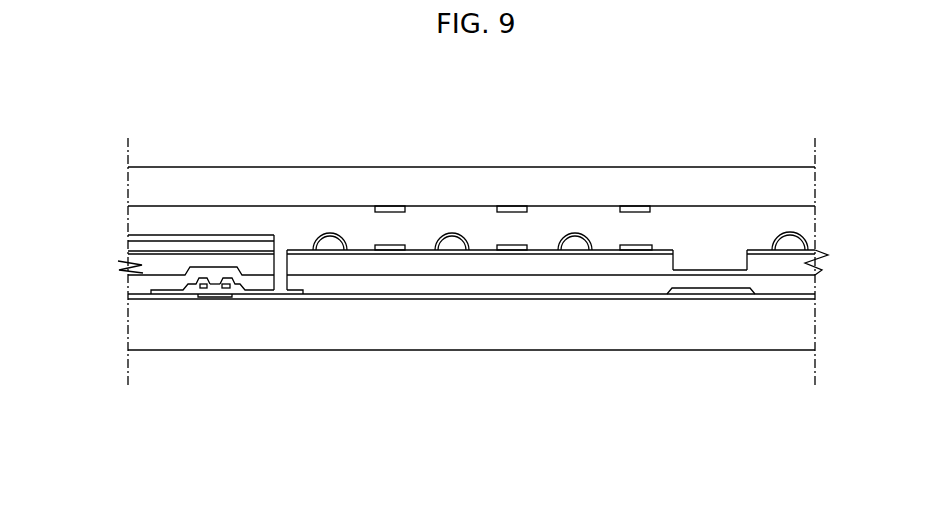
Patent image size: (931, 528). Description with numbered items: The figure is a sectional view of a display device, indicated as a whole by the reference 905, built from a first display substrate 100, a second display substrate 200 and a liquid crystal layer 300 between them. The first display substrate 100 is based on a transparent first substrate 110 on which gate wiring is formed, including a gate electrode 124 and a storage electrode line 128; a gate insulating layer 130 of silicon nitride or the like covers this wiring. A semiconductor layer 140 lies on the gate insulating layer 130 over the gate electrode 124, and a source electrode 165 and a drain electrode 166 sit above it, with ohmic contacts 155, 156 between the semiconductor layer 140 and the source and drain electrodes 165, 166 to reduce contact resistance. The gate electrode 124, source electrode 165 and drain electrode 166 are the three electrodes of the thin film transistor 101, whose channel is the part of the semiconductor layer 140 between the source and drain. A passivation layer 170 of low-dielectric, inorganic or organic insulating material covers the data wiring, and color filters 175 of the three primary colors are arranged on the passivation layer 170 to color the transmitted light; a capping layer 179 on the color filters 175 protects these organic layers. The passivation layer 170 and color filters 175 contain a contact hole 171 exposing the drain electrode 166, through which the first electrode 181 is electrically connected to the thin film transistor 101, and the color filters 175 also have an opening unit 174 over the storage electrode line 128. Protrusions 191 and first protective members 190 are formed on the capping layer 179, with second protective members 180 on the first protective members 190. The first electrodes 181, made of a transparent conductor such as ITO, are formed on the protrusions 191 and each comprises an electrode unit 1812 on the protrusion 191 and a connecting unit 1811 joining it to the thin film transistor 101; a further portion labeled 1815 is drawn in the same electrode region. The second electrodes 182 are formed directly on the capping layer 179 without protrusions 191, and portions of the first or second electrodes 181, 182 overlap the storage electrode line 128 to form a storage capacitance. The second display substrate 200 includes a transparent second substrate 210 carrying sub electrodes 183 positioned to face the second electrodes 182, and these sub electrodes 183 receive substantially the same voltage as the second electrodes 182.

The first display substrate 100 is at (132, 400).
The thin film transistor 101 is at (256, 341).
The first substrate 110 is at (653, 330).
The gate electrode 124 is at (215, 337).
The storage electrode line 128 is at (712, 292).
The gate insulating layer 130 is at (357, 297).
The semiconductor layer 140 is at (218, 289).
The ohmic contact 155 is at (202, 288).
The ohmic contact 156 is at (228, 290).
The source electrode 165 is at (180, 292).
The drain electrode 166 is at (267, 291).
The passivation layer 170 is at (136, 284).
The contact hole 171 is at (283, 266).
The opening unit 174 is at (687, 258).
The color filter 175 is at (143, 269).
The capping layer 179 is at (262, 252).
The second protective member 180 is at (196, 237).
The first electrode 181 is at (363, 137).
The connecting unit 1811 is at (328, 236).
The electrode unit 1812 is at (338, 239).
The lens base layer 1815 is at (712, 268).
The second electrode 182 is at (393, 246).
The sub electrode 183 is at (522, 207).
The first protective member 190 is at (138, 247).
The protrusion 191 is at (346, 240).
The second display substrate 200 is at (143, 143).
The second substrate 210 is at (238, 178).
The liquid crystal layer 300 is at (143, 216).
The light path 905 is at (537, 110).